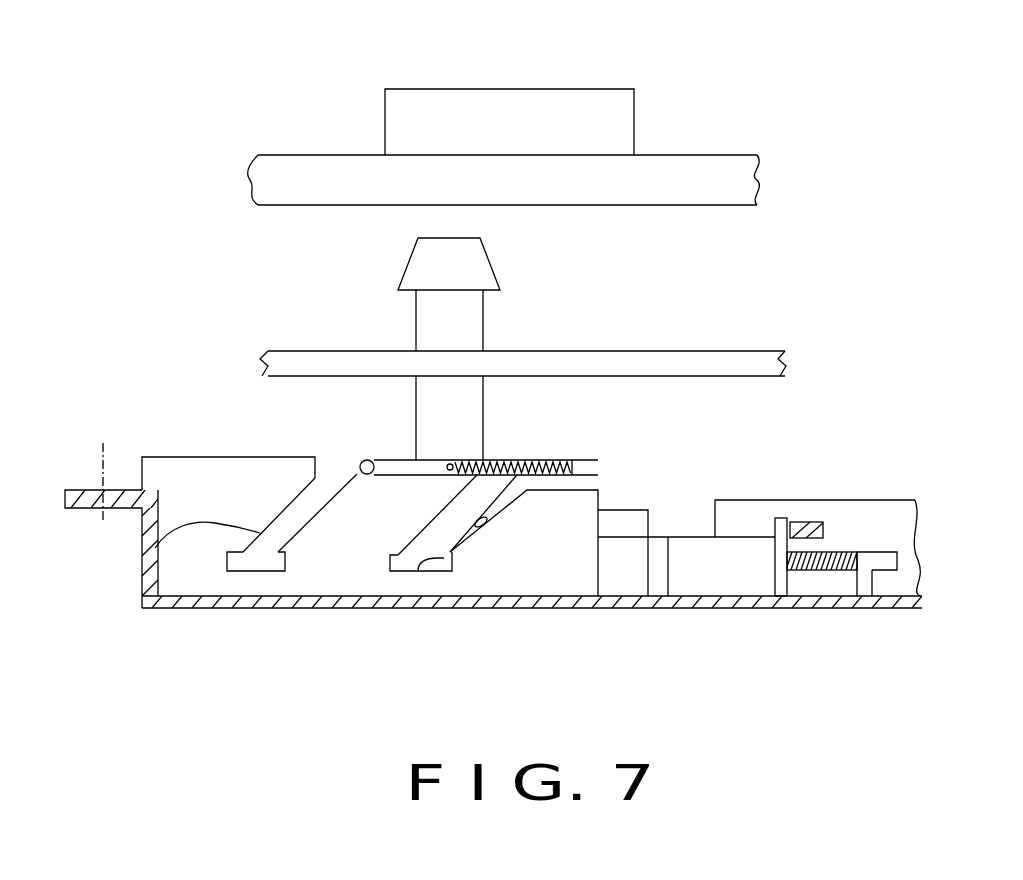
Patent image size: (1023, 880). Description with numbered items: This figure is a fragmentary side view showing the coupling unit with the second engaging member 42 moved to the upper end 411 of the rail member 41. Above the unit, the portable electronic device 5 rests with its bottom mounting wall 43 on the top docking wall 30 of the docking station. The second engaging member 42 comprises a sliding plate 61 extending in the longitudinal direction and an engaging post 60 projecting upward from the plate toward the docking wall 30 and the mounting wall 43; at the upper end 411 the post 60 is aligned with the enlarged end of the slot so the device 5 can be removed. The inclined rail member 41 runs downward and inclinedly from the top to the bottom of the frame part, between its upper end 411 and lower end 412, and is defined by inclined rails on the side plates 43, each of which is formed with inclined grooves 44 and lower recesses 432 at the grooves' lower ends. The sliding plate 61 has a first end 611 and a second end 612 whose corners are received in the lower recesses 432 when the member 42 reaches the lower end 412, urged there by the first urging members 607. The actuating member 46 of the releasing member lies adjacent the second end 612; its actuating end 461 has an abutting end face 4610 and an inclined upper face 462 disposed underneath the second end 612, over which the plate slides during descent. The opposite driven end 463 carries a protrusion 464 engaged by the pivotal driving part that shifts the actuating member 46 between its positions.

The portable electronic device 5 is at (270, 137).
The bottom mounting wall / side plates 43 is at (743, 181).
The inclined grooves 44 is at (142, 566).
The second engaging member 42 is at (424, 234).
The engaging post 60 is at (487, 263).
The top docking wall 30 is at (683, 351).
The sliding plate 61 is at (381, 452).
The first end 611 is at (360, 463).
The first urging members 607 is at (505, 455).
The second end 612 is at (537, 461).
The inclined rail member 41 is at (313, 533).
The upper end 411 is at (355, 474).
The lower end 412 is at (360, 553).
The lower recesses 432 is at (268, 572).
The abutting end face 4610 is at (432, 580).
The inclined upper face 462 is at (486, 527).
The actuating end 461 is at (548, 560).
The actuating member 46 is at (592, 607).
The driven end 463 is at (750, 612).
The protrusion 464 is at (776, 524).